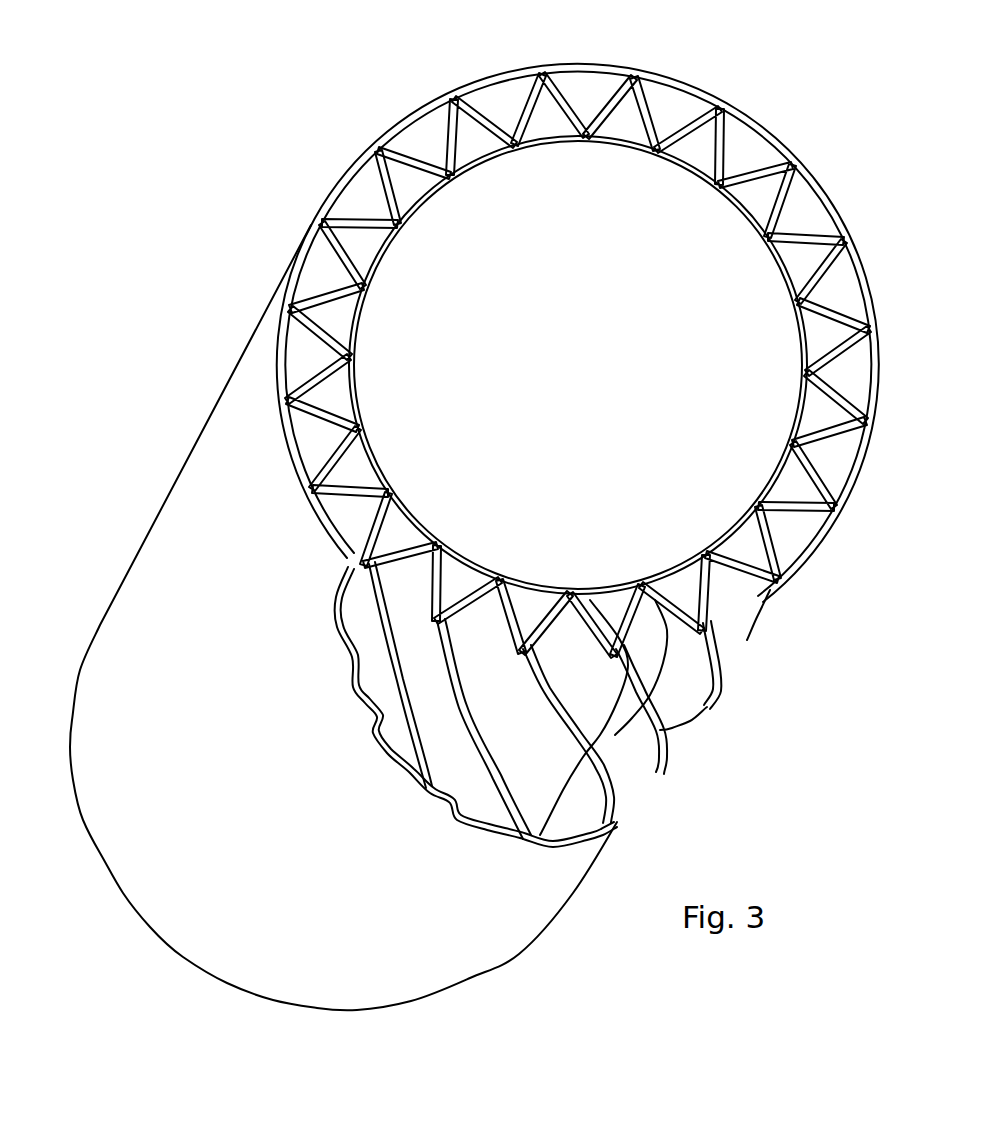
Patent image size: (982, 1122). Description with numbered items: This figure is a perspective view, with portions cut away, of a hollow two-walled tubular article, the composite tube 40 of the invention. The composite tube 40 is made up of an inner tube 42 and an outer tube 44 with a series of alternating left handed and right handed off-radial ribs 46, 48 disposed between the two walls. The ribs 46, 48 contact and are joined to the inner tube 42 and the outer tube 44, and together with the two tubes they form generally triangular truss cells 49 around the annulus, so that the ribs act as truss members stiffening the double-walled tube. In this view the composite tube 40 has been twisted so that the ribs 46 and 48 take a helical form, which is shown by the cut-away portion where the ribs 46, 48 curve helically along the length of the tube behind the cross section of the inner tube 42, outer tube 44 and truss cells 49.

The composite tube 40 is at (740, 750).
The inner tube 42 is at (805, 354).
The outer tube 44 is at (349, 175).
The left handed off-radial rib 46 is at (418, 173).
The right handed off-radial rib 48 is at (350, 267).
The truss cell 49 is at (818, 410).